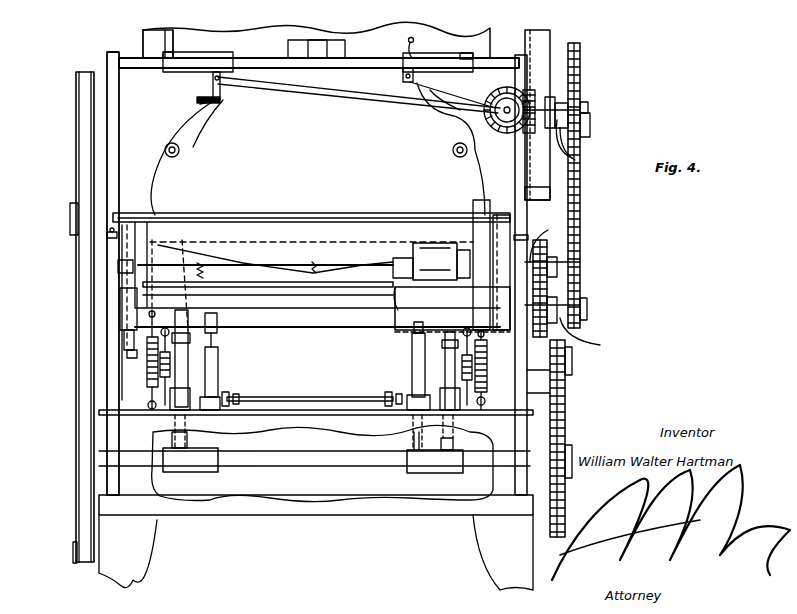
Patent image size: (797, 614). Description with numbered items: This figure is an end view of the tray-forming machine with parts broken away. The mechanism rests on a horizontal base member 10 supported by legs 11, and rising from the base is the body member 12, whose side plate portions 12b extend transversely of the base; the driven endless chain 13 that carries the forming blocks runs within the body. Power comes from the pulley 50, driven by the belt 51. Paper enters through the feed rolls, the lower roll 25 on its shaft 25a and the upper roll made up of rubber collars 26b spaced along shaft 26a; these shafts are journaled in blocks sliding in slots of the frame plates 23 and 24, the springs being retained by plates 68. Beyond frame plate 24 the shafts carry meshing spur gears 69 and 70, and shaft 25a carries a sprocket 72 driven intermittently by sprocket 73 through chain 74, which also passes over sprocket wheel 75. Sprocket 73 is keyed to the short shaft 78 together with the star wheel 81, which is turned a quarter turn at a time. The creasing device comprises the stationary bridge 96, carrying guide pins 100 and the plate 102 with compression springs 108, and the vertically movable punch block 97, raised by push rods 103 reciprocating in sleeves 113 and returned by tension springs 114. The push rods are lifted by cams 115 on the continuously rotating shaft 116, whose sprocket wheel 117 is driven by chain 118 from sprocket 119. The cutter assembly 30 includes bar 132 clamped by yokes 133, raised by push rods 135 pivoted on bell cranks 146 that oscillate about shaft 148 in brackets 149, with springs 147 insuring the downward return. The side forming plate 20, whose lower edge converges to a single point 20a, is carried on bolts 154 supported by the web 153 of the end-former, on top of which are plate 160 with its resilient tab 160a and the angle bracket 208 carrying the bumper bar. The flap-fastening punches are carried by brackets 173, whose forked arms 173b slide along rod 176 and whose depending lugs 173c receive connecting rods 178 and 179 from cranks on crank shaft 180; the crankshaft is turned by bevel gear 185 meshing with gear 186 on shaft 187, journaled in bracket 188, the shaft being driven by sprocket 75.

The base member 10 is at (240, 510).
The legs 11 is at (138, 560).
The body member 12 is at (255, 25).
The side plate portions 12b is at (160, 43).
The endless chain 13 is at (322, 40).
The side forming plate 20 is at (300, 157).
The point 20a is at (312, 262).
The frame plate 23 is at (112, 283).
The frame plate 24 is at (520, 380).
The feed roll 25 is at (395, 330).
The shaft 25a is at (592, 335).
The shaft 26a is at (548, 230).
The rubber collars 26b is at (433, 243).
The cutter assembly 30 is at (296, 330).
The pulley 50 is at (70, 220).
The belt 51 is at (78, 423).
The plates 68 is at (110, 236).
The spur gear 69 is at (556, 301).
The spur gear 70 is at (555, 263).
The sprocket 72 is at (588, 306).
The sprocket 73 is at (591, 126).
The chain 74 is at (581, 196).
The sprocket wheel 75 is at (590, 107).
The short shaft 78 is at (580, 140).
The star wheel 81 is at (538, 36).
The bridge 96 is at (362, 240).
The punch block 97 is at (268, 294).
The guide pin 100 is at (125, 353).
The plate 102 is at (316, 198).
The push rods 103 is at (188, 350).
The compression springs 108 is at (204, 271).
The sleeves 113 is at (180, 405).
The tension springs 114 is at (147, 363).
The cams 115 is at (205, 470).
The shaft 116 is at (300, 470).
The sprocket wheel 117 is at (532, 510).
The chain 118 is at (565, 393).
The sprocket 119 is at (570, 362).
The bar 132 is at (317, 317).
The yokes 133 is at (216, 330).
The push rods 135 is at (220, 368).
The bell cranks 146 is at (212, 441).
The springs 147 is at (160, 375).
The shaft 148 is at (300, 402).
The brackets 149 is at (240, 398).
The web 153 is at (190, 115).
The bolts 154 is at (172, 157).
The plate 160 is at (225, 105).
The tab 160a is at (412, 36).
The brackets 173 is at (196, 50).
The arm 173b is at (173, 35).
The lugs 173c is at (221, 86).
The rod 176 is at (312, 66).
The connecting rod 178 is at (310, 92).
The connecting rod 179 is at (462, 97).
The crank shaft 180 is at (509, 85).
The bevel gear 185 is at (497, 92).
The gear 186 is at (538, 100).
The shaft 187 is at (572, 160).
The bracket 188 is at (556, 108).
The angle bracket 208 is at (198, 91).